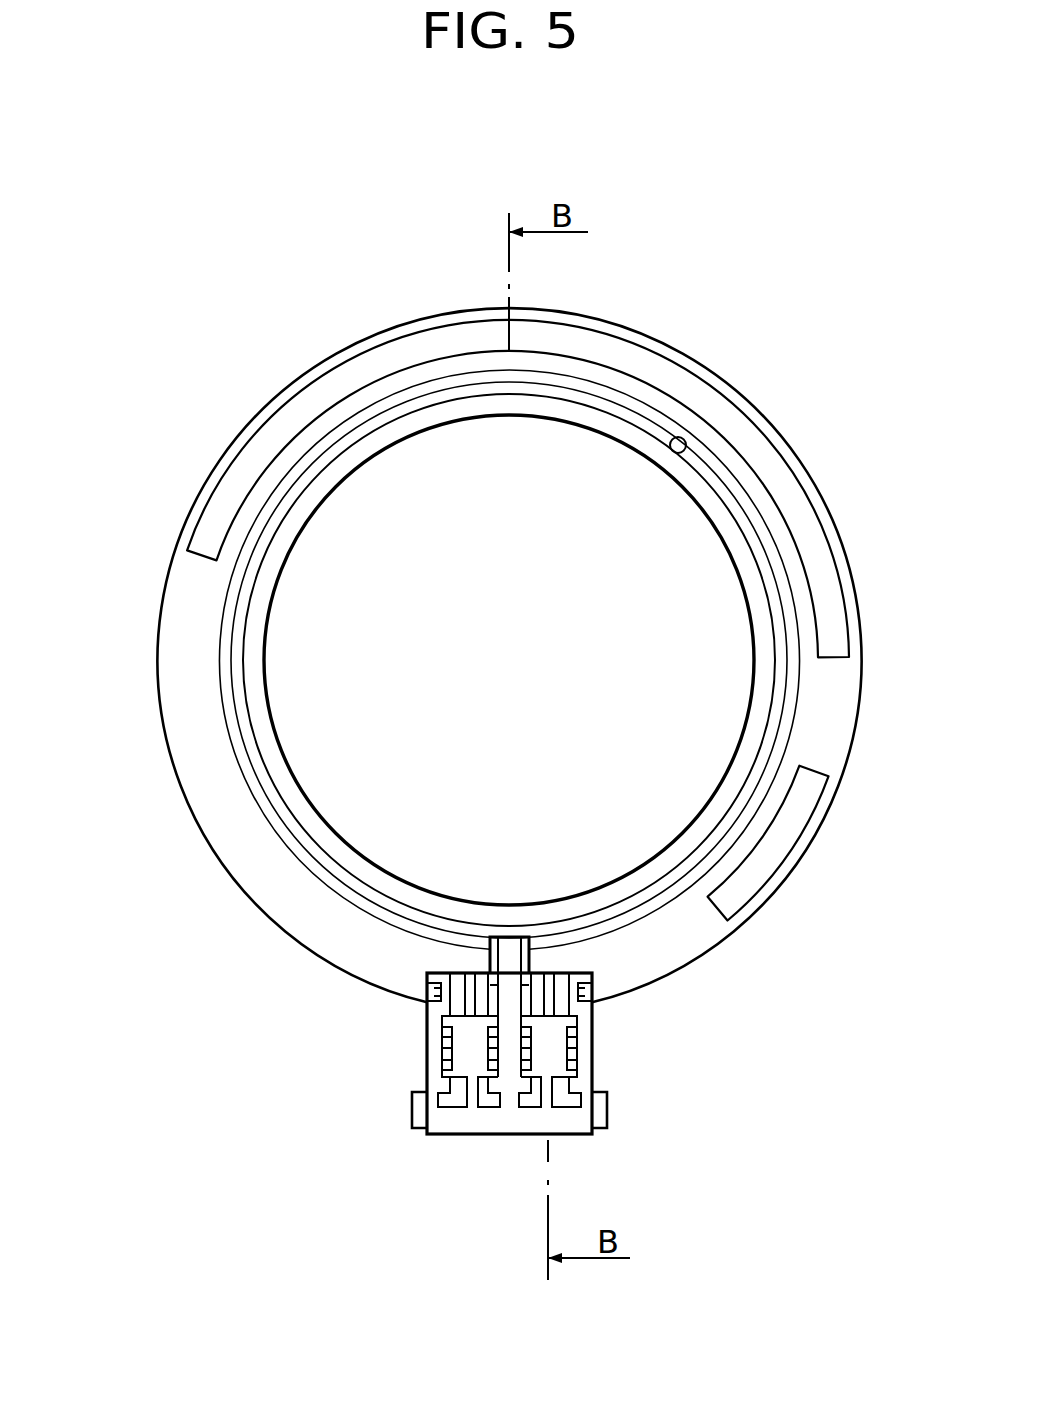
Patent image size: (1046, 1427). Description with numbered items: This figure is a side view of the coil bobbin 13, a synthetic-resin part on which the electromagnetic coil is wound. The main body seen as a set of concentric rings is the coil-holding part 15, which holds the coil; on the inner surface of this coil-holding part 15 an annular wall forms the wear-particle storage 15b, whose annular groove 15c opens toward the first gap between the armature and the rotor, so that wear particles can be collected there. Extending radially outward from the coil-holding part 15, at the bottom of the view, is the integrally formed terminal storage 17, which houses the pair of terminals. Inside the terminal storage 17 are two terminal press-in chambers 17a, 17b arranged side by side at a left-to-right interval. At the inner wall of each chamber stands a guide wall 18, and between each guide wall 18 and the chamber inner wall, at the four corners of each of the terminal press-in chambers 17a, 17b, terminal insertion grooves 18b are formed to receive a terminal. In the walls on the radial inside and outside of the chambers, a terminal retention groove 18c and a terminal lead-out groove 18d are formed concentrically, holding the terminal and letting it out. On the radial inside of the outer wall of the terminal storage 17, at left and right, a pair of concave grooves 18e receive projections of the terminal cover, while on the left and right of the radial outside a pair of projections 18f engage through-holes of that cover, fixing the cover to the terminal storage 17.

The coil bobbin 13 is at (715, 340).
The coil-holding part 15 is at (443, 659).
The wear-particle storage 15b is at (588, 430).
The annular groove 15c is at (676, 453).
The terminal storage 17 is at (494, 1060).
The terminal press-in chamber 17a is at (553, 1040).
The terminal press-in chamber 17b is at (455, 1056).
The guide wall 18 is at (513, 1027).
The terminal insertion groove 18b is at (500, 1030).
The terminal retention groove 18c is at (457, 972).
The terminal lead-out groove 18d is at (457, 1105).
The concave groove 18e is at (432, 992).
The projection 18f is at (413, 1108).